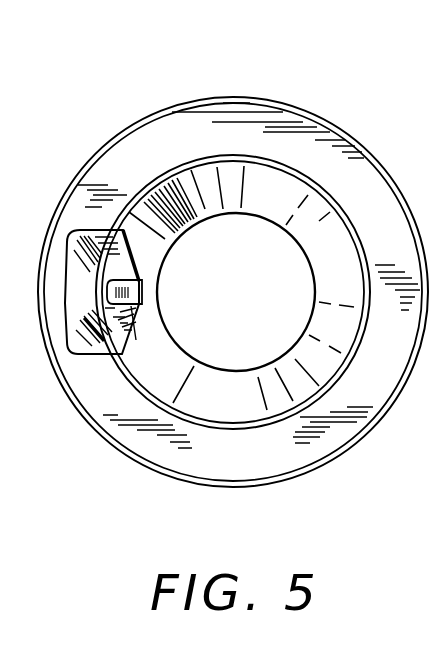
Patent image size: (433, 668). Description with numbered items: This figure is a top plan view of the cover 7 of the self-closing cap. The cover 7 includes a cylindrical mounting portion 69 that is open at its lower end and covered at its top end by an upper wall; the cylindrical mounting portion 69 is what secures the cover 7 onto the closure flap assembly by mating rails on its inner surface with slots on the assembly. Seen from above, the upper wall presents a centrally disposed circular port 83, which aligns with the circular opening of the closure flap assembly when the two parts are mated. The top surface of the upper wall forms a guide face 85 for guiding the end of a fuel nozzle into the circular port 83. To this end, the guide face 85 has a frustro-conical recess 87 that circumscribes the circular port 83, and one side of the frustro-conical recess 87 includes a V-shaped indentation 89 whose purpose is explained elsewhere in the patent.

The cover 7 is at (92, 94).
The cylindrical mounting portion 69 is at (361, 446).
The circular port 83 is at (199, 216).
The guide face 85 is at (268, 190).
The frustro-conical recess 87 is at (315, 218).
The V-shaped indentation 89 is at (93, 257).